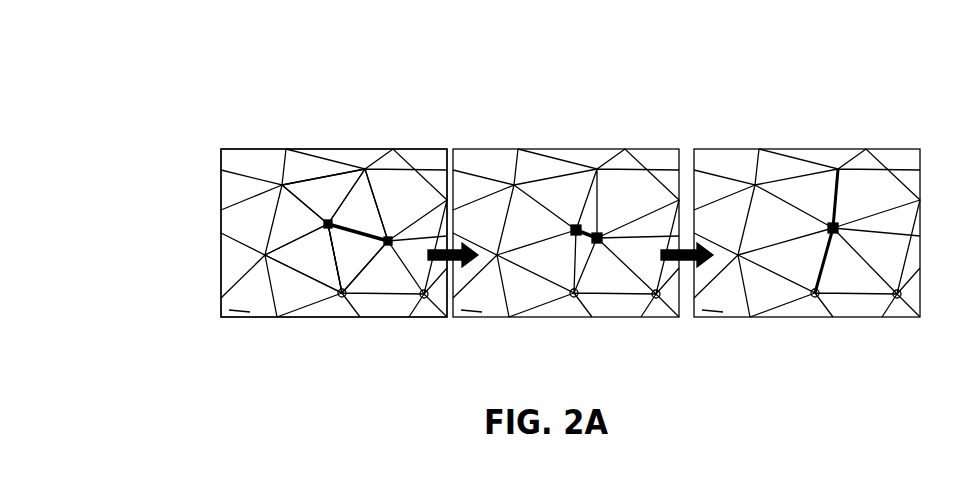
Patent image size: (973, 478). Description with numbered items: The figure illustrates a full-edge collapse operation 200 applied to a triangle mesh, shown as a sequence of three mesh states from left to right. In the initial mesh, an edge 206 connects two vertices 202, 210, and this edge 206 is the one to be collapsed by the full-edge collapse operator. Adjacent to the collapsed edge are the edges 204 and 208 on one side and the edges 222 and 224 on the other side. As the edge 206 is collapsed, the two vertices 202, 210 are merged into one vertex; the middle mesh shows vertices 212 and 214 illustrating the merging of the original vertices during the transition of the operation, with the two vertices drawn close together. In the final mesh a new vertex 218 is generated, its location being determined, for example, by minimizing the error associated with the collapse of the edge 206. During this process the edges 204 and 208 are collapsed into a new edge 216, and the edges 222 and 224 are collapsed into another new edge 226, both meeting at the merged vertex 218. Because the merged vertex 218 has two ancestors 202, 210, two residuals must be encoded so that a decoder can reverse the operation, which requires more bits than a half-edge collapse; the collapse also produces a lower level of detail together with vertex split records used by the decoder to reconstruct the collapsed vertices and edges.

The full-edge collapse operation 200 is at (110, 172).
The vertex 202 is at (330, 222).
The edge 204 is at (348, 185).
The edge 206 is at (355, 228).
The edge 208 is at (380, 213).
The vertex 210 is at (390, 240).
The vertex 212 is at (577, 230).
The vertex 214 is at (600, 238).
The new edge 216 is at (825, 202).
The new vertex 218 is at (833, 228).
The edge 222 is at (330, 253).
The edge 224 is at (365, 265).
The new edge 226 is at (825, 263).